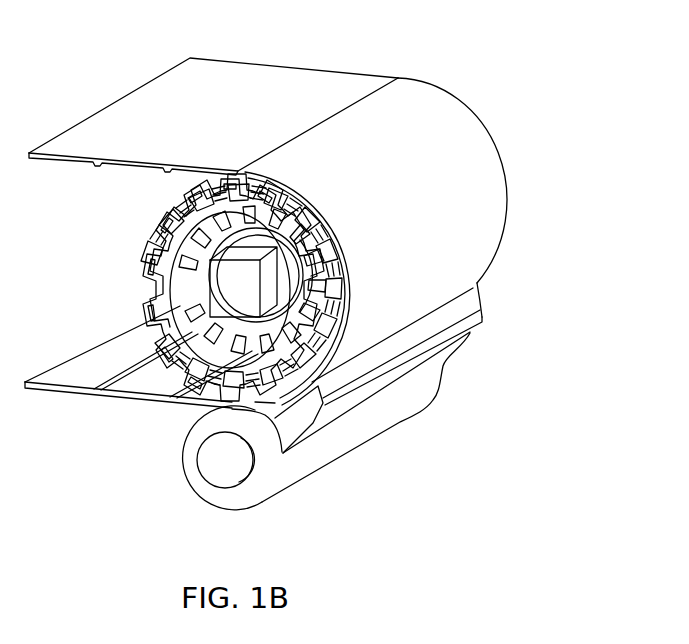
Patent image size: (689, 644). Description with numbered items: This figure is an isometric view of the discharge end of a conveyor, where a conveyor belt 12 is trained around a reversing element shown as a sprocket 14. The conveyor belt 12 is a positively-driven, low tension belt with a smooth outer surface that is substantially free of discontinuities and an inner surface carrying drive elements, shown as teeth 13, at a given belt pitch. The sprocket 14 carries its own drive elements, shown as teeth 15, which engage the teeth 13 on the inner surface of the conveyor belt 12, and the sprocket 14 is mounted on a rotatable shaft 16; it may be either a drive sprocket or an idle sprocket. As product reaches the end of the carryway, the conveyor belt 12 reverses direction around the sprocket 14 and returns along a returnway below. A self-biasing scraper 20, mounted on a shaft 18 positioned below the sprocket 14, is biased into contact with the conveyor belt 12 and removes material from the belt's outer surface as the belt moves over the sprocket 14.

The conveyor belt 12 is at (273, 82).
The teeth 13 is at (100, 383).
The sprocket 14 is at (152, 251).
The teeth 15 is at (160, 208).
The rotatable shaft 16 is at (248, 306).
The shaft 18 is at (210, 462).
The self-biasing scraper 20 is at (443, 395).